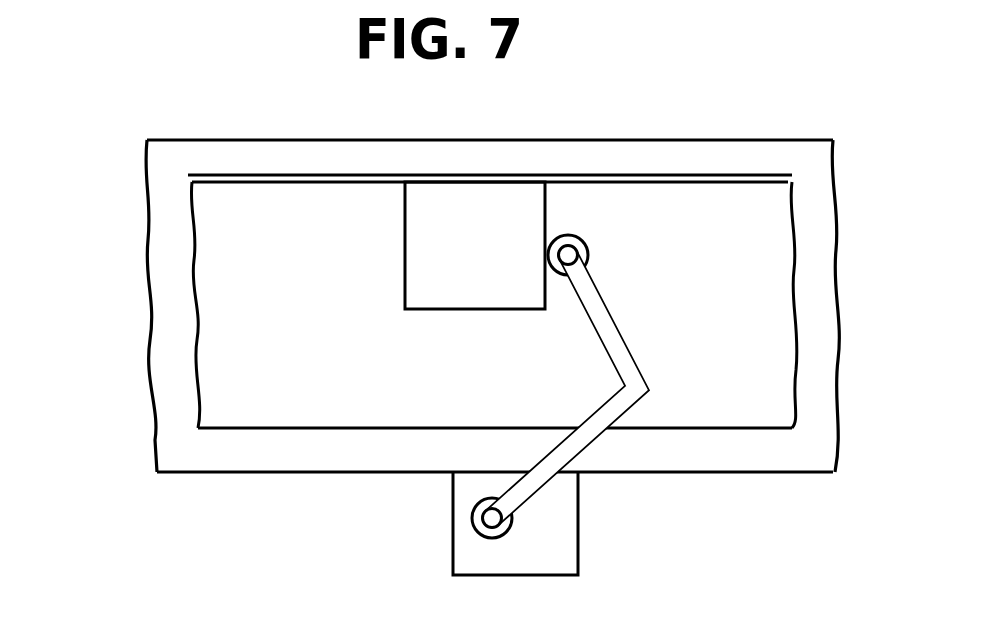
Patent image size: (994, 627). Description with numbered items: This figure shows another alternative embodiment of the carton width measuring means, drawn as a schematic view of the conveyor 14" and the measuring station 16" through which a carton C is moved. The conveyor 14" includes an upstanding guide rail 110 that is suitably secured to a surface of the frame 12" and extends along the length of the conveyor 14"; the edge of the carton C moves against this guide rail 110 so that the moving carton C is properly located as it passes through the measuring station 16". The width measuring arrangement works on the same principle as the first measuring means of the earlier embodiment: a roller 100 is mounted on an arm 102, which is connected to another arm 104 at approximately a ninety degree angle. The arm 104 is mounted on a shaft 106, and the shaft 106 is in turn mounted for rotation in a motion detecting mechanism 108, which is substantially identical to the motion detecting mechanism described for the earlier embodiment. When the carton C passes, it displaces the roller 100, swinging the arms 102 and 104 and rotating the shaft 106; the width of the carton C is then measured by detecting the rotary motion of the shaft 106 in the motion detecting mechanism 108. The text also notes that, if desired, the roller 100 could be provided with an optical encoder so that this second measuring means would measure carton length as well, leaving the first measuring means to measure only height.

The frame 12 is at (286, 132).
The conveyor 14 is at (187, 290).
The measuring station 16 is at (570, 209).
The upstanding guide rail 110 is at (452, 175).
The carton C is at (404, 258).
The roller 100 is at (590, 250).
The arm 102 is at (623, 333).
The arm 104 is at (593, 410).
The shaft 106 is at (474, 504).
The motion detecting mechanism 108 is at (585, 545).